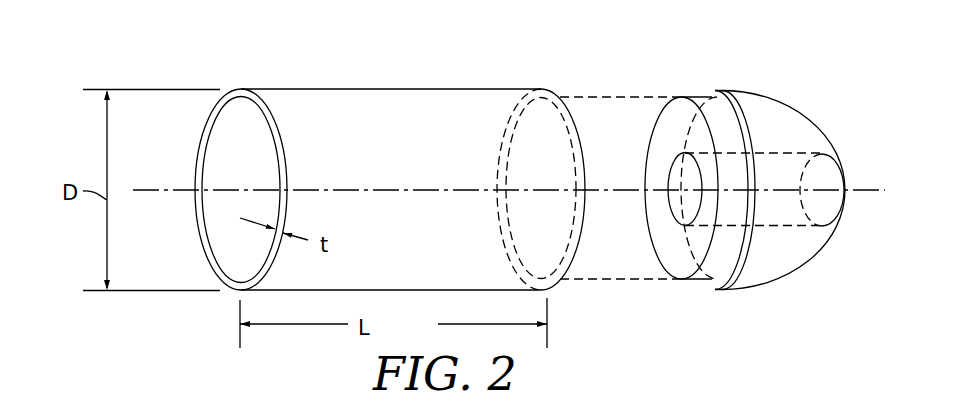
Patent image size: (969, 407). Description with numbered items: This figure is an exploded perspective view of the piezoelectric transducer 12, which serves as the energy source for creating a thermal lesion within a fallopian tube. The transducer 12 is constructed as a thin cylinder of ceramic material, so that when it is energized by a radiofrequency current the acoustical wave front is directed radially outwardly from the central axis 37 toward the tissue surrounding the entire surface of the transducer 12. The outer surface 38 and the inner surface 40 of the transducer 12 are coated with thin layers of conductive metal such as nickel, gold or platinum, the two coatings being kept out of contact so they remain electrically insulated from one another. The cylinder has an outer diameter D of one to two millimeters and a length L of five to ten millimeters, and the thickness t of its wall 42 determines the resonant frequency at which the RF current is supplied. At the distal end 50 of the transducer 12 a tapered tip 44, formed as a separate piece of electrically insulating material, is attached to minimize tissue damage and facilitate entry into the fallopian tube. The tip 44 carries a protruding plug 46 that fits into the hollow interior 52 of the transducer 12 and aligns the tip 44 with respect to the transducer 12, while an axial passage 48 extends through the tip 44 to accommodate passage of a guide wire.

The piezoelectric transducer 12 is at (400, 53).
The central axis 37 is at (182, 191).
The outer surface 38 is at (376, 173).
The inner surface 40 is at (250, 101).
The wall 42 is at (283, 228).
The tapered tip 44 is at (791, 173).
The protruding plug 46 is at (658, 118).
The axial passage 48 is at (843, 168).
The distal end 50 is at (593, 158).
The hollow interior 52 is at (545, 227).